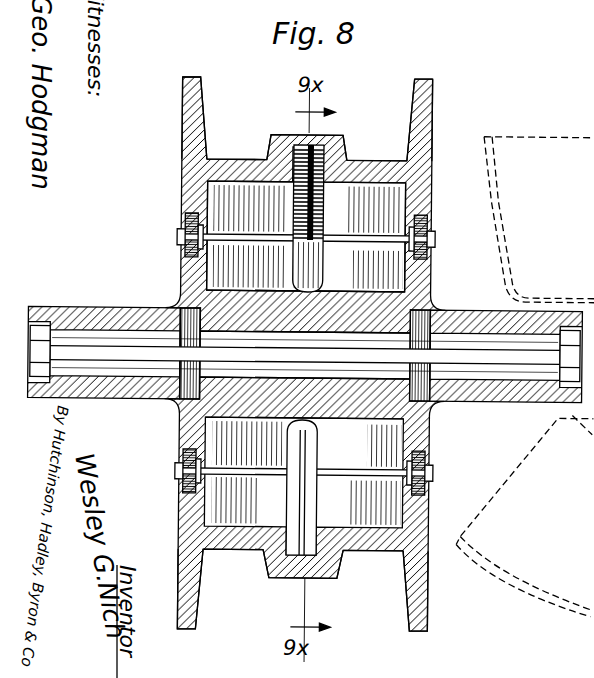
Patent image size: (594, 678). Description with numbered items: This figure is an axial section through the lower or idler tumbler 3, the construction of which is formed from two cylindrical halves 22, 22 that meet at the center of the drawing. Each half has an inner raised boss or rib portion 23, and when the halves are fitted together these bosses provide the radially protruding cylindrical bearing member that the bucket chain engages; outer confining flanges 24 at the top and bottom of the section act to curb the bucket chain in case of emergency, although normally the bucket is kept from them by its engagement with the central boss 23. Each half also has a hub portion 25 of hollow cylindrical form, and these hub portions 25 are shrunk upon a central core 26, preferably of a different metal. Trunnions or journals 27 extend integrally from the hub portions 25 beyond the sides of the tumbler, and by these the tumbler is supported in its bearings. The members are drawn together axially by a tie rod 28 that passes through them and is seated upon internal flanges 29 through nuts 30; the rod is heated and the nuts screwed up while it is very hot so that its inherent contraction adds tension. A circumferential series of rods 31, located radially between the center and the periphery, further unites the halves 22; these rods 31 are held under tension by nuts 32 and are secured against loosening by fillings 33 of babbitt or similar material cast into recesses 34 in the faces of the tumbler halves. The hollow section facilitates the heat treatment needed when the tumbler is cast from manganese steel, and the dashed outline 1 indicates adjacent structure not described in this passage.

The wheel rim 1 is at (528, 137).
The idler or lower tumbler 3 is at (431, 187).
The cylindrical halves 22 is at (237, 160).
The raised boss or rib portion 23 is at (283, 122).
The outer confining flanges 24 is at (190, 82).
The hub portions 25 is at (355, 296).
The central core 26 is at (262, 317).
The trunnions or journals 27 is at (461, 309).
The tie rod 28 is at (130, 350).
The internal flanges 29 is at (57, 362).
The nuts 30 is at (35, 352).
The rods 31 is at (339, 233).
The nuts 32 is at (433, 238).
The fillings 33 is at (415, 252).
The recesses 34 is at (183, 214).